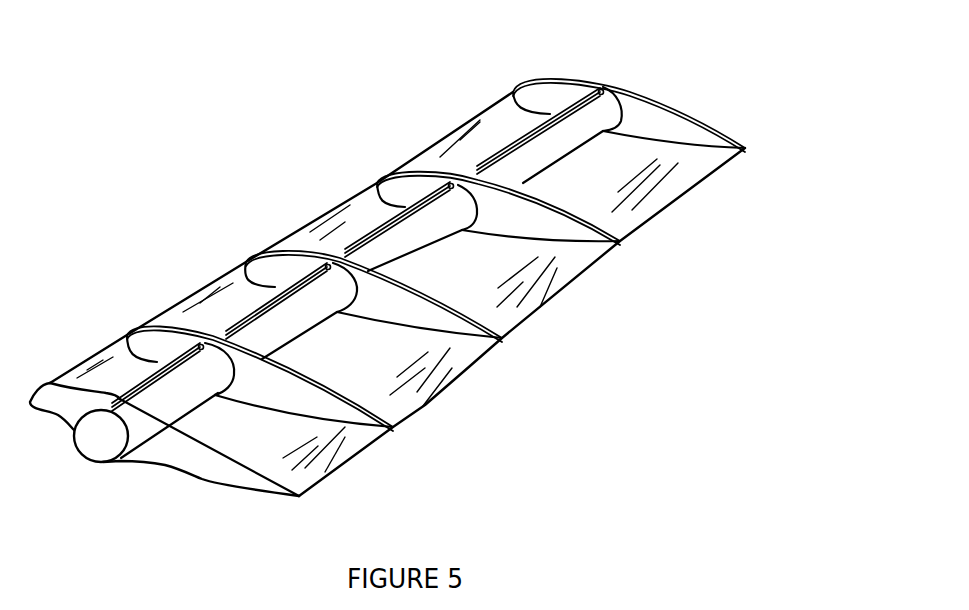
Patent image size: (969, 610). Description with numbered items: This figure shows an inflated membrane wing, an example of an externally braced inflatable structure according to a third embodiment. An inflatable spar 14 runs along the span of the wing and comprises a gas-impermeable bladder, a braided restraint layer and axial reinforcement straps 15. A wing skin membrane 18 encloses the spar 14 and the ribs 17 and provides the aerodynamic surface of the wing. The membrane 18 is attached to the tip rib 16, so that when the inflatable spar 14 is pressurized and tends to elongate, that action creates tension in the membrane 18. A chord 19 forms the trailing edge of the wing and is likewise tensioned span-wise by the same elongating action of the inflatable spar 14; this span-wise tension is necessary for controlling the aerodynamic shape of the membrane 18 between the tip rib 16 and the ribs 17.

The inflatable spar 14 is at (595, 122).
The axial reinforcement straps 15 is at (403, 208).
The tip rib 16 is at (730, 130).
The ribs 17 is at (500, 324).
The wing skin membrane 18 is at (200, 480).
The chord 19 is at (367, 450).